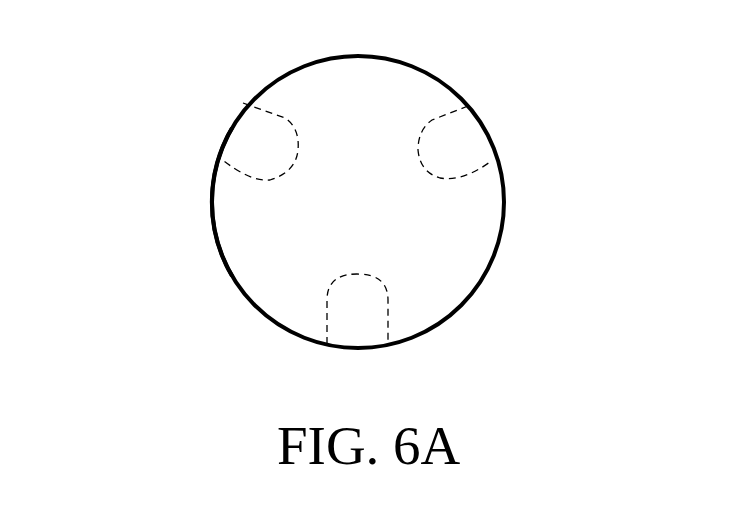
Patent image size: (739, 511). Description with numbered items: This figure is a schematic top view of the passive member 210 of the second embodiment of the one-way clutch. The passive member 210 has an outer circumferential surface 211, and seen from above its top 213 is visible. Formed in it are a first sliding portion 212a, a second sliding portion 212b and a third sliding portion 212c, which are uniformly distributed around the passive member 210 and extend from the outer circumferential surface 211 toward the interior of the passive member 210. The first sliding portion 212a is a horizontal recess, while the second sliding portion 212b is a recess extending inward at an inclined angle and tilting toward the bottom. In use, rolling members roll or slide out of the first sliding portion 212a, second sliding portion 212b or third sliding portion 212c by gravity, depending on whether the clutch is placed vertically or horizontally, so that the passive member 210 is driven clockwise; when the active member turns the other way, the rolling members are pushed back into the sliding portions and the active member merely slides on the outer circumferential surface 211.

The passive member 210 is at (432, 60).
The outer circumferential surface 211 is at (212, 203).
The top 213 is at (268, 252).
The first sliding portion 212a is at (373, 316).
The second sliding portion 212b is at (470, 127).
The third sliding portion 212c is at (248, 127).